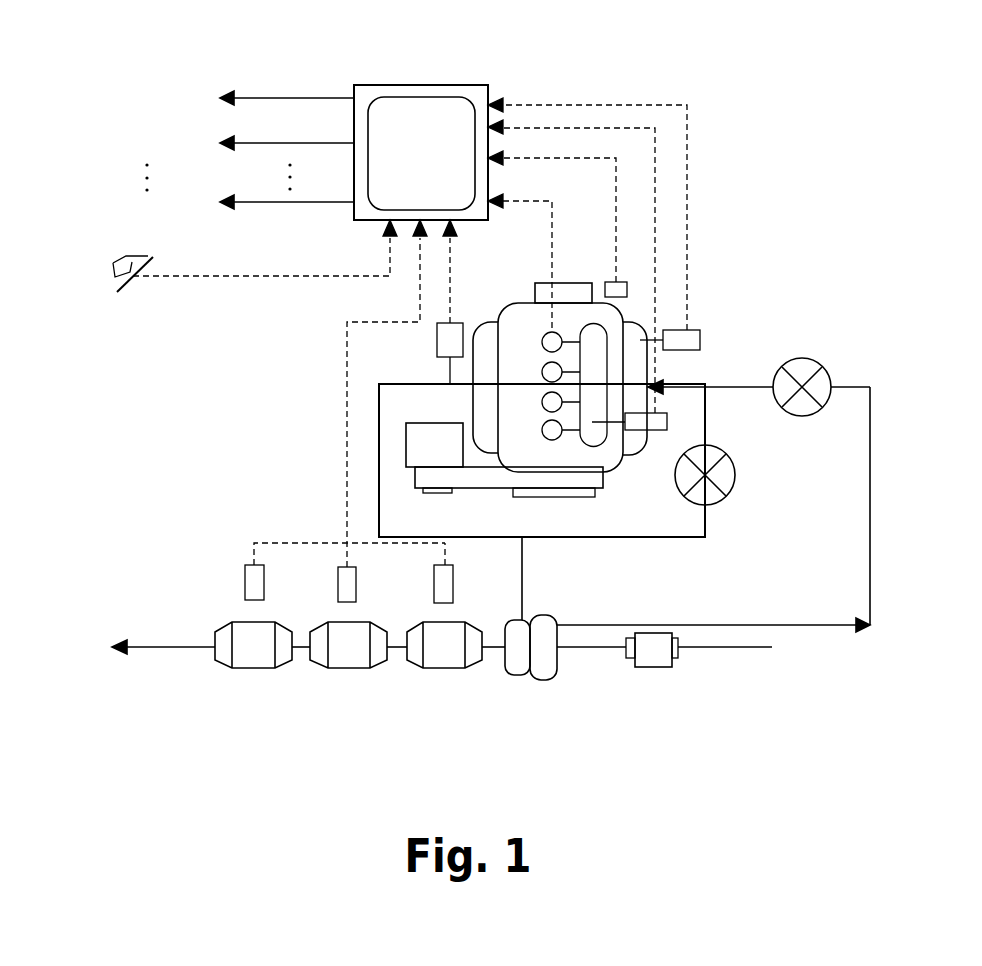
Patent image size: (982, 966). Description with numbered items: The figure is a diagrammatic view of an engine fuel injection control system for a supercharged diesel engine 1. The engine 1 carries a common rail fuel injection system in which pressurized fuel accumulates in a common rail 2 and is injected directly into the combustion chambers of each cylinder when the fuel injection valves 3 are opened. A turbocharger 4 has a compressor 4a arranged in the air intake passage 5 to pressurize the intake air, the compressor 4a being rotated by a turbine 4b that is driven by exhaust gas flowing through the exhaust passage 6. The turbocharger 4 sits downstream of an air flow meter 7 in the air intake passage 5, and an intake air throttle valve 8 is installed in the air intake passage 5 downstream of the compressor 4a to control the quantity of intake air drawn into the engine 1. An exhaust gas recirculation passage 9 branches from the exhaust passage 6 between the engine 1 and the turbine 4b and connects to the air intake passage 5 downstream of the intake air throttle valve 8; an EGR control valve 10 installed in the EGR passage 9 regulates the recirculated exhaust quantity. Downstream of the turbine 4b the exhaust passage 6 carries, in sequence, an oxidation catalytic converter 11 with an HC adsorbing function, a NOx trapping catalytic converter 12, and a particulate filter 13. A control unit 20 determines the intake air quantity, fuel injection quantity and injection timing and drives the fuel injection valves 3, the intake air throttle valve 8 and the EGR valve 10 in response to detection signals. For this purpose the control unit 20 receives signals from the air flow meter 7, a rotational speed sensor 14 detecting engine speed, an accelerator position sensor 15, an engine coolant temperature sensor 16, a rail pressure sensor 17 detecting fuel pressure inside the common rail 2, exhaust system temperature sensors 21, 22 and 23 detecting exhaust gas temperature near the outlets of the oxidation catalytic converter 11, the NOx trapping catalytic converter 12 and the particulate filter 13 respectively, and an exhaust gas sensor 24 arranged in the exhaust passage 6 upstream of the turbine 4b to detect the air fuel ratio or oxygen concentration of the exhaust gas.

The engine 1 is at (630, 472).
The common rail 2 is at (592, 447).
The fuel injection valves 3 is at (542, 430).
The turbocharger 4 is at (528, 701).
The compressor 4a is at (540, 680).
The turbine 4b is at (515, 675).
The air intake passage 5 is at (755, 652).
The exhaust passage 6 is at (522, 580).
The air flow meter 7 is at (655, 667).
The intake air throttle valve 8 is at (808, 417).
The EGR passage 9 is at (665, 537).
The EGR control valve 10 is at (712, 505).
The oxidation catalytic converter 11 is at (445, 668).
The NOx trapping catalytic converter 12 is at (347, 668).
The particulate filter 13 is at (258, 668).
The rotational speed sensor 14 is at (618, 282).
The accelerator position sensor 15 is at (125, 283).
The engine coolant temperature sensor 16 is at (697, 330).
The rail pressure sensor 17 is at (667, 420).
The control unit 20 is at (410, 85).
The exhaust system temperature sensor 21 is at (455, 582).
The exhaust system temperature sensor 22 is at (357, 585).
The exhaust system temperature sensor 23 is at (265, 580).
The exhaust gas sensor 24 is at (437, 340).